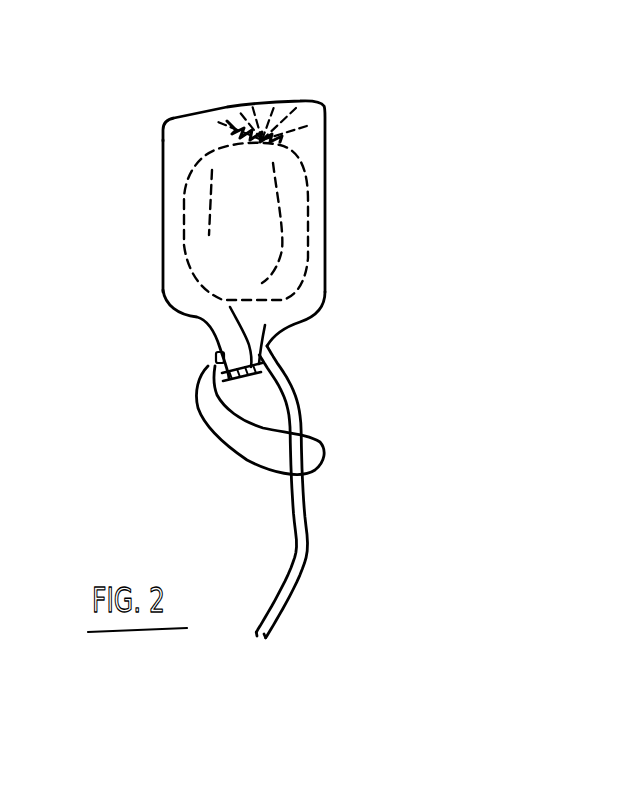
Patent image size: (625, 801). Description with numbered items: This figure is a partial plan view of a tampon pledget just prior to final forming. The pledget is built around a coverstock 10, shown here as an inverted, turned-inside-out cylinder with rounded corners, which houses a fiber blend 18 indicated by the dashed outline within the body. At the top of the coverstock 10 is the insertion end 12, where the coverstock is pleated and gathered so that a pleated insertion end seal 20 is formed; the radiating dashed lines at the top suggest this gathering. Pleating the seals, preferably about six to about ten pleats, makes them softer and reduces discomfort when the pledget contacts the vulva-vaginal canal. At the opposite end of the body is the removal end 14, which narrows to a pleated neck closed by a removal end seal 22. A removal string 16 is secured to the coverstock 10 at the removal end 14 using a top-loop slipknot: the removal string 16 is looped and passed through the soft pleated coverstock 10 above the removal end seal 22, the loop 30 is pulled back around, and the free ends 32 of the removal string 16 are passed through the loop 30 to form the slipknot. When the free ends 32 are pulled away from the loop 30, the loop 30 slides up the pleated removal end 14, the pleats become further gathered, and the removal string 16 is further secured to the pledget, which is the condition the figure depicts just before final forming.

The coverstock 10 is at (328, 203).
The insertion end 12 is at (138, 140).
The removal end 14 is at (323, 330).
The removal string 16 is at (307, 507).
The fiber blend 18 is at (275, 175).
The insertion end seal 20 is at (262, 112).
The removal end seal 22 is at (233, 343).
The loop 30 is at (317, 435).
The free ends 32 is at (267, 643).